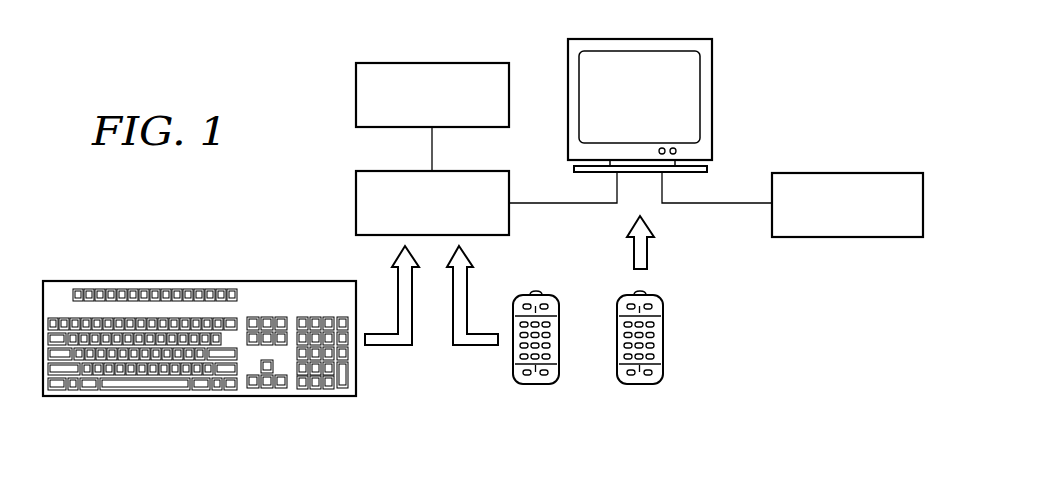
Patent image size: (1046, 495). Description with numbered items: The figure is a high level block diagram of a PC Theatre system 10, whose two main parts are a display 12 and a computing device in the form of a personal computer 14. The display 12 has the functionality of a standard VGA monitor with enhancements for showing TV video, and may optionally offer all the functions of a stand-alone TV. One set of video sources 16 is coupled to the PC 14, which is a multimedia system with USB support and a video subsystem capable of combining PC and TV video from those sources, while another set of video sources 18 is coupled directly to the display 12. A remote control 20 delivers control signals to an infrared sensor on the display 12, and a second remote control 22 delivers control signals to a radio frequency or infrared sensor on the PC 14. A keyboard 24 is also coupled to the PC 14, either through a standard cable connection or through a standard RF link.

The PC Theatre system 10 is at (860, 61).
The display 12 is at (713, 90).
The personal computer 14 is at (356, 204).
The video sources 16 is at (356, 94).
The video sources 18 is at (848, 173).
The remote control 20 is at (640, 385).
The remote control 22 is at (537, 385).
The keyboard 24 is at (198, 281).